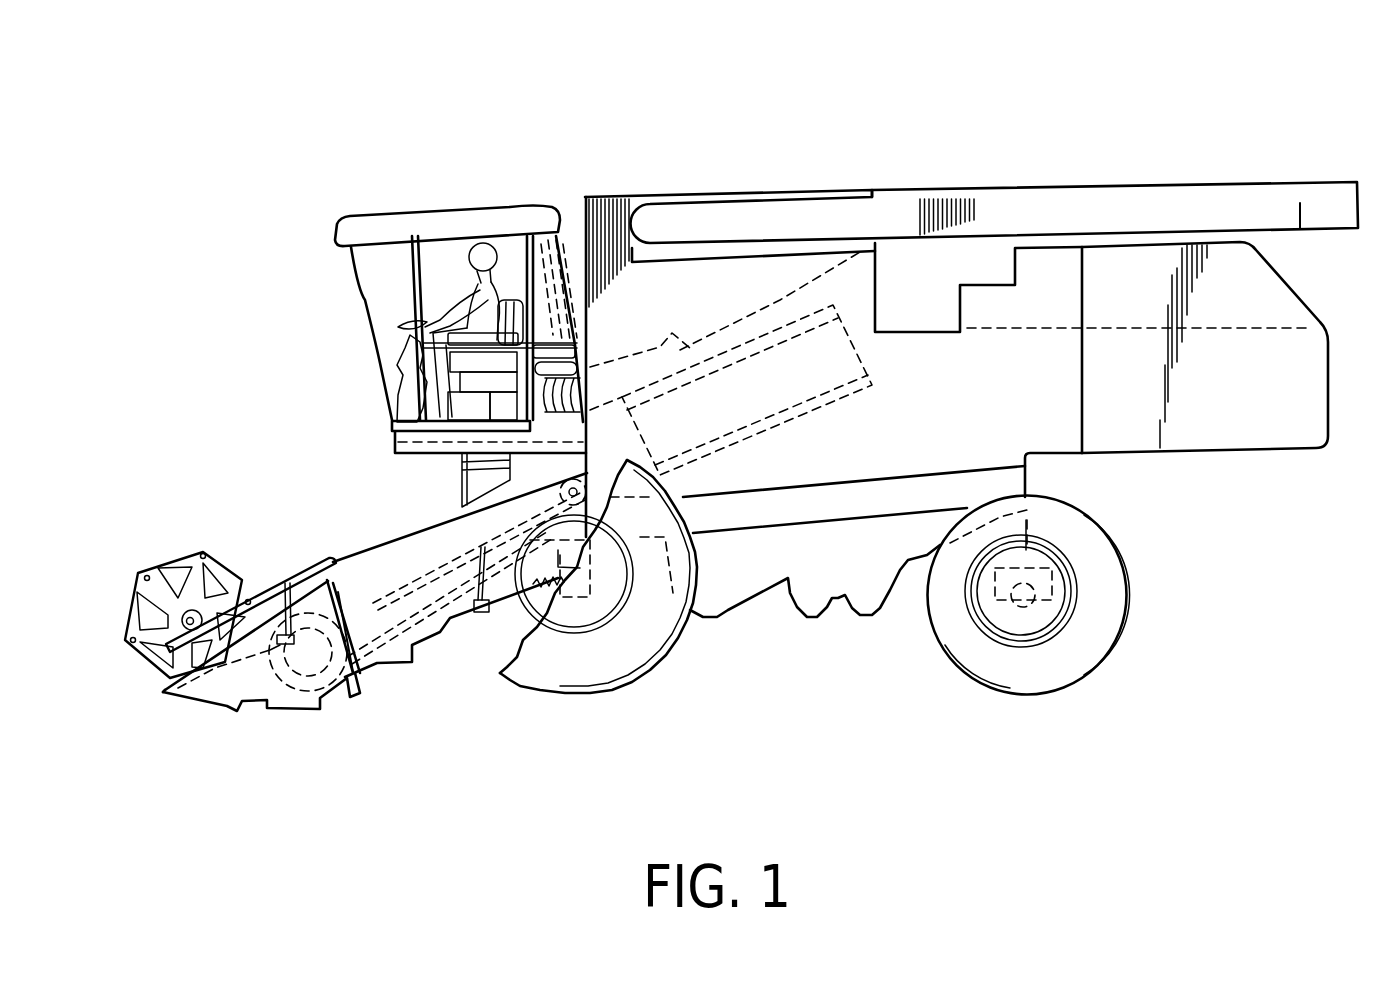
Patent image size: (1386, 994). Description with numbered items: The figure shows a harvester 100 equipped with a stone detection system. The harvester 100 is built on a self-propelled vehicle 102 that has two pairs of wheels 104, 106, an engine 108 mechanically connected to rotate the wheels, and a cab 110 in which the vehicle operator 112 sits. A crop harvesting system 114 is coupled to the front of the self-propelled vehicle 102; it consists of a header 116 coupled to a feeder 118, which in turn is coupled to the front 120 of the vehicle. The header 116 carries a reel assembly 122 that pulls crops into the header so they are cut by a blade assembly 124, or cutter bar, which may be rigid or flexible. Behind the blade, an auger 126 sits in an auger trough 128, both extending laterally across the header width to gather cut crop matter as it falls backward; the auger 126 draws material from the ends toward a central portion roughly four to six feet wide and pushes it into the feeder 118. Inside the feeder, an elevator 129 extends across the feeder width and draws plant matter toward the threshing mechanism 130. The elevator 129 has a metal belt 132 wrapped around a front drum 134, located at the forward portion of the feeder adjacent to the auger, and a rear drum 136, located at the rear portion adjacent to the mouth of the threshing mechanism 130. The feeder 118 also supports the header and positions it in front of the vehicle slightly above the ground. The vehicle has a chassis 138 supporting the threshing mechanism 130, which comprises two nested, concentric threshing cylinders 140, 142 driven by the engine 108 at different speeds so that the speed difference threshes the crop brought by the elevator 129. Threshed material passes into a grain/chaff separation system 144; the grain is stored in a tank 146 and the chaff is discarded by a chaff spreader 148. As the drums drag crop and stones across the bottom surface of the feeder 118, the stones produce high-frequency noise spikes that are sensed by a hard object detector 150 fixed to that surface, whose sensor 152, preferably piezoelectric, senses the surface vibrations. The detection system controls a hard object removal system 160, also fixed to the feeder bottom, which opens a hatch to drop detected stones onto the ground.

The harvester 100 is at (850, 148).
The self-propelled vehicle 102 is at (957, 394).
The wheels 104 is at (595, 671).
The wheels 106 is at (1041, 675).
The engine 108 is at (978, 245).
The cab 110 is at (450, 205).
The vehicle operator 112 is at (466, 254).
The crop harvesting system 114 is at (377, 710).
The header 116 is at (241, 535).
The feeder 118 is at (383, 538).
The front 120 is at (495, 652).
The reel assembly 122 is at (155, 560).
The blade assembly 124 is at (188, 711).
The auger 126 is at (293, 675).
The auger trough 128 is at (328, 700).
The elevator 129 is at (438, 558).
The threshing mechanism 130 is at (734, 458).
The metal belt 132 is at (385, 593).
The front drum 134 is at (386, 679).
The rear drum 136 is at (598, 477).
The chassis 138 is at (878, 480).
The threshing cylinder 140 is at (802, 305).
The threshing cylinder 142 is at (723, 342).
The grain/chaff separation system 144 is at (972, 346).
The tank 146 is at (621, 196).
The chaff spreader 148 is at (1300, 292).
The hard object detector 150 is at (457, 618).
The sensor 152 is at (478, 615).
The hard object removal system 160 is at (497, 685).